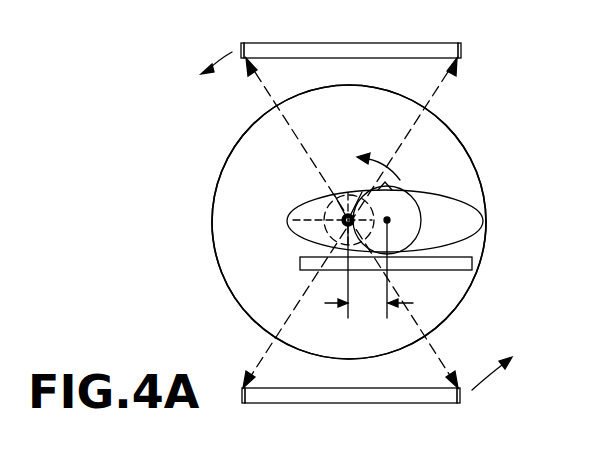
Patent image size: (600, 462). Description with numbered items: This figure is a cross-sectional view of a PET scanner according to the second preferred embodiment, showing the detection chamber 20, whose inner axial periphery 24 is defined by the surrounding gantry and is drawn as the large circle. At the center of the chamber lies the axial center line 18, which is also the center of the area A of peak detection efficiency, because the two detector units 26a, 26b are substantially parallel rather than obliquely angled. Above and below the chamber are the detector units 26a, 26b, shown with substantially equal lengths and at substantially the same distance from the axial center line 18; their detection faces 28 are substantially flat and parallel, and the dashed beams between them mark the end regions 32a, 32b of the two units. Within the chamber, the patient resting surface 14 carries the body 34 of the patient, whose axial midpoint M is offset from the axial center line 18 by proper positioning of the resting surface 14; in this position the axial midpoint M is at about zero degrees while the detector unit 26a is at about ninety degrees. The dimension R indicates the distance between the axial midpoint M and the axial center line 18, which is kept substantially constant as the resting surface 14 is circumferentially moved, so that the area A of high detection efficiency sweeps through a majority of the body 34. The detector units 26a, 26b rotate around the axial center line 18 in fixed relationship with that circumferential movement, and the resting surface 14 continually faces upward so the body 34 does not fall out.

The patient resting surface 14 is at (408, 270).
The axial center line 18 is at (330, 193).
The detection chamber 20 is at (352, 152).
The inner axial periphery 24 is at (234, 293).
The detector unit 26a is at (362, 43).
The detector unit 26b is at (345, 404).
The detection faces 28 is at (340, 61).
The bar end a 32a is at (458, 43).
The bar end b 32b is at (253, 43).
The body 34 is at (417, 190).
The area of high detection efficiency A is at (293, 212).
The axial midpoint M is at (387, 220).
The distance R is at (369, 305).